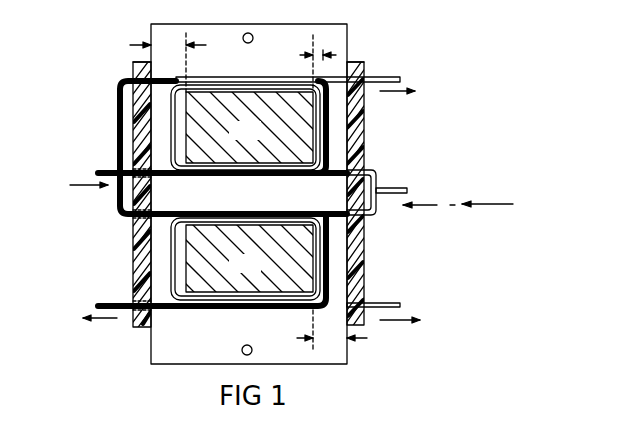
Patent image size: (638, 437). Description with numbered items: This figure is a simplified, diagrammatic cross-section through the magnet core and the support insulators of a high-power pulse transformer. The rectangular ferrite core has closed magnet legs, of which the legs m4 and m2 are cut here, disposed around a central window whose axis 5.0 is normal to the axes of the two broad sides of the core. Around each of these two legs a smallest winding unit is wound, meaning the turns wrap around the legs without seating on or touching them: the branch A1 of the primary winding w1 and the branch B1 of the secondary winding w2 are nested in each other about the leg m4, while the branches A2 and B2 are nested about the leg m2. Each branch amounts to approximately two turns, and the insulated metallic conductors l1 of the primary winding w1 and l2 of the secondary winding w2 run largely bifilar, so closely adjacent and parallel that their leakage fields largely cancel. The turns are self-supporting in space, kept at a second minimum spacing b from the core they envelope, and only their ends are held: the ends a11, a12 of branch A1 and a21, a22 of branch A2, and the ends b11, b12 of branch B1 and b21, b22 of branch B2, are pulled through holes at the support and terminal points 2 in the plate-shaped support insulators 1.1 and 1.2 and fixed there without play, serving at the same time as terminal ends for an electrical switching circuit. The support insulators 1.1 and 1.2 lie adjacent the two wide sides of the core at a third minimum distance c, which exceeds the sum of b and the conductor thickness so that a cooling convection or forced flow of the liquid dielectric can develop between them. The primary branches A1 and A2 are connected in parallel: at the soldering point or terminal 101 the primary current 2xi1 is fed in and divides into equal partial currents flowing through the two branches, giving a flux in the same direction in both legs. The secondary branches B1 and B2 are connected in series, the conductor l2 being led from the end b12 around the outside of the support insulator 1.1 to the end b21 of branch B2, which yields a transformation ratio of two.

The support insulator 1.1 is at (142, 147).
The support insulator 1.2 is at (366, 125).
The support and terminal points 2 is at (355, 75).
The magnet leg m4 is at (245, 127).
The magnet leg m2 is at (248, 258).
The branch of primary winding A1 is at (172, 99).
The branch of primary winding A2 is at (174, 270).
The branch of secondary winding B1 is at (119, 116).
The branch of secondary winding B2 is at (118, 298).
The winding end b11 is at (133, 180).
The winding end b12 is at (136, 76).
The winding end b21 is at (132, 226).
The winding end b22 is at (134, 311).
The winding end a11 is at (367, 170).
The winding end a12 is at (347, 68).
The winding end a21 is at (367, 214).
The winding end a22 is at (360, 303).
The soldering point or terminal 101 is at (378, 191).
The primary winding w1 is at (373, 87).
The secondary winding w2 is at (112, 130).
The winding conductor of primary winding l1 is at (340, 174).
The winding conductor of secondary winding l2 is at (250, 310).
The primary current 2xi1 is at (424, 207).
The axis of the window 5.0 is at (496, 203).
The third minimum distance c is at (248, 191).
The second minimum spacing b is at (318, 61).